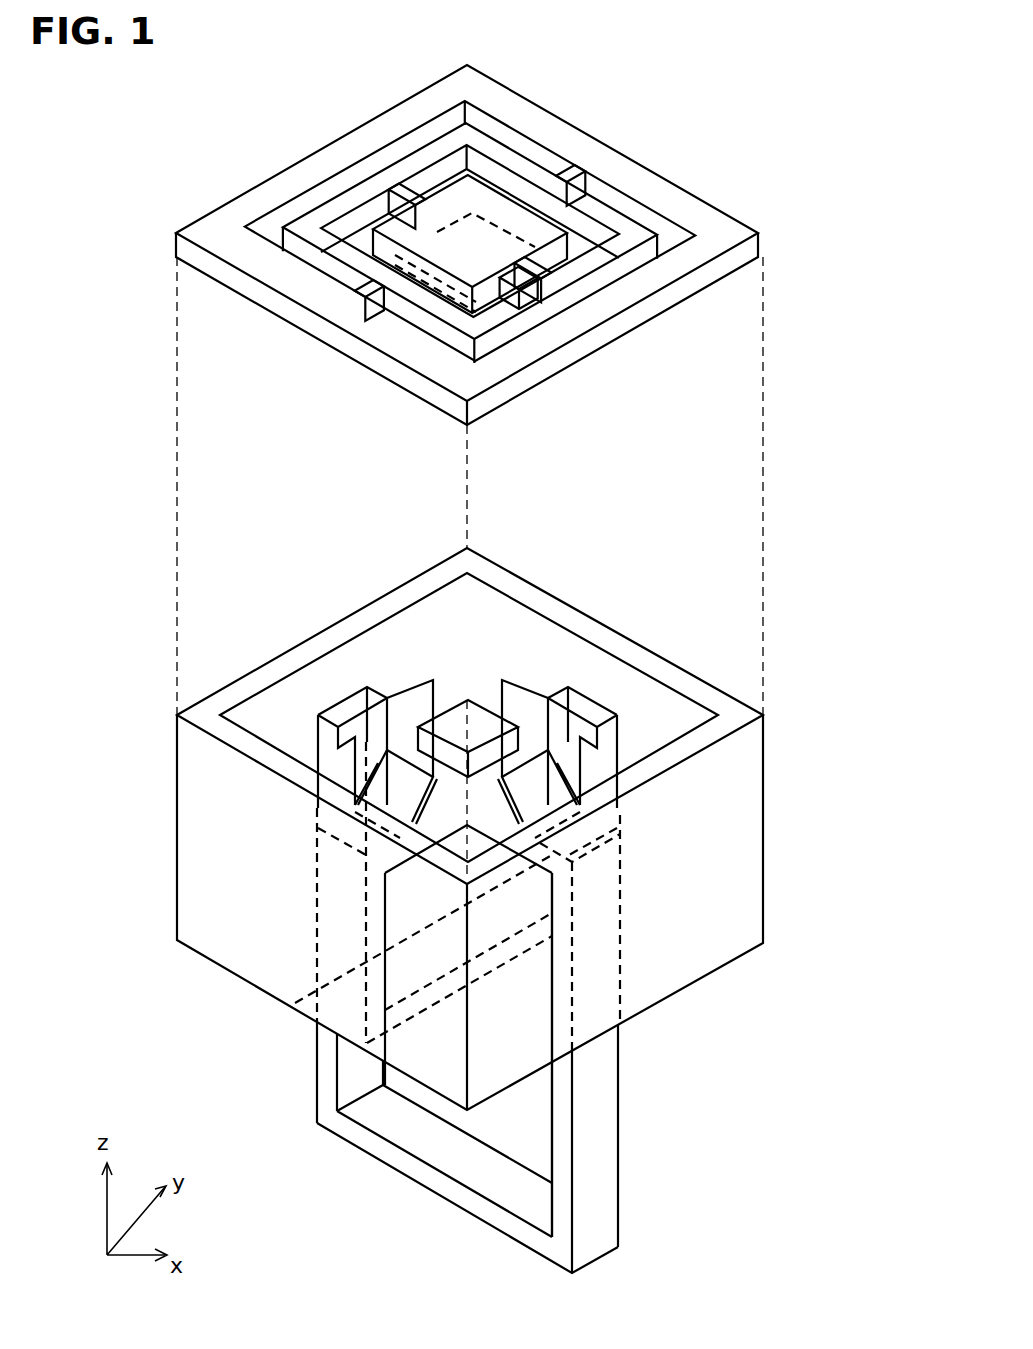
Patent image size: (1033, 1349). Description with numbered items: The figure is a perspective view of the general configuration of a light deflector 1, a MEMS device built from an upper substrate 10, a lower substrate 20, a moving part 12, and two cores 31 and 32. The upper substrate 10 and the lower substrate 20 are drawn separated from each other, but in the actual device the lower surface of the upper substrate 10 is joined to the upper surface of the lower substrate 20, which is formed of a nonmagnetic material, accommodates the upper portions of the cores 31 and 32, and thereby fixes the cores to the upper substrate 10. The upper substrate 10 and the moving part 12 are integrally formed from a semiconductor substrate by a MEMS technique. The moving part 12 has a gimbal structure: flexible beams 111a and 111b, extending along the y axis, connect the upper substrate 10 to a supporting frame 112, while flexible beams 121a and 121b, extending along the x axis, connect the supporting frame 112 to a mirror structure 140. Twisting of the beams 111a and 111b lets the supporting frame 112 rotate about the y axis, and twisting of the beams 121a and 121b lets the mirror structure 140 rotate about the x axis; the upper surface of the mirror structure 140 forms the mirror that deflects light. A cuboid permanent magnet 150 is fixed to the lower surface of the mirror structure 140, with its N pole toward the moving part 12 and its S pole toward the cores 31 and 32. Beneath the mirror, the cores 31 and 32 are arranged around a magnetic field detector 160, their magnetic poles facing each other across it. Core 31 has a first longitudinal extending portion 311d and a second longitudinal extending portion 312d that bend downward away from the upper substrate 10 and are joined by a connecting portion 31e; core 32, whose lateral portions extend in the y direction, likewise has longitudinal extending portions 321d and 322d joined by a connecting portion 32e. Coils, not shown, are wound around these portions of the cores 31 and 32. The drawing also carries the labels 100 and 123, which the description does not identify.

The light deflector 1 is at (472, 644).
The upper substrate 10 is at (466, 222).
The frame 100 is at (467, 238).
The flexible beam 111a is at (608, 144).
The flexible beam 111b is at (228, 321).
The supporting frame 112 is at (470, 155).
The moving part 12 is at (384, 222).
The flexible beam 121a is at (360, 142).
The flexible beam 121b is at (688, 297).
The protrusion 123 is at (589, 346).
The mirror structure 140 is at (565, 243).
The permanent magnet 150 is at (312, 243).
The lower substrate 20 is at (472, 910).
The magnetic field detector 160 is at (303, 690).
The core 31 is at (453, 980).
The first longitudinal extending portion 311d is at (268, 905).
The second longitudinal extending portion 312d is at (648, 980).
The connecting portion 31e is at (467, 1179).
The core 32 is at (461, 906).
The first longitudinal extending portion 321d is at (254, 845).
The second longitudinal extending portion 322d is at (674, 744).
The connecting portion 32e is at (413, 1050).